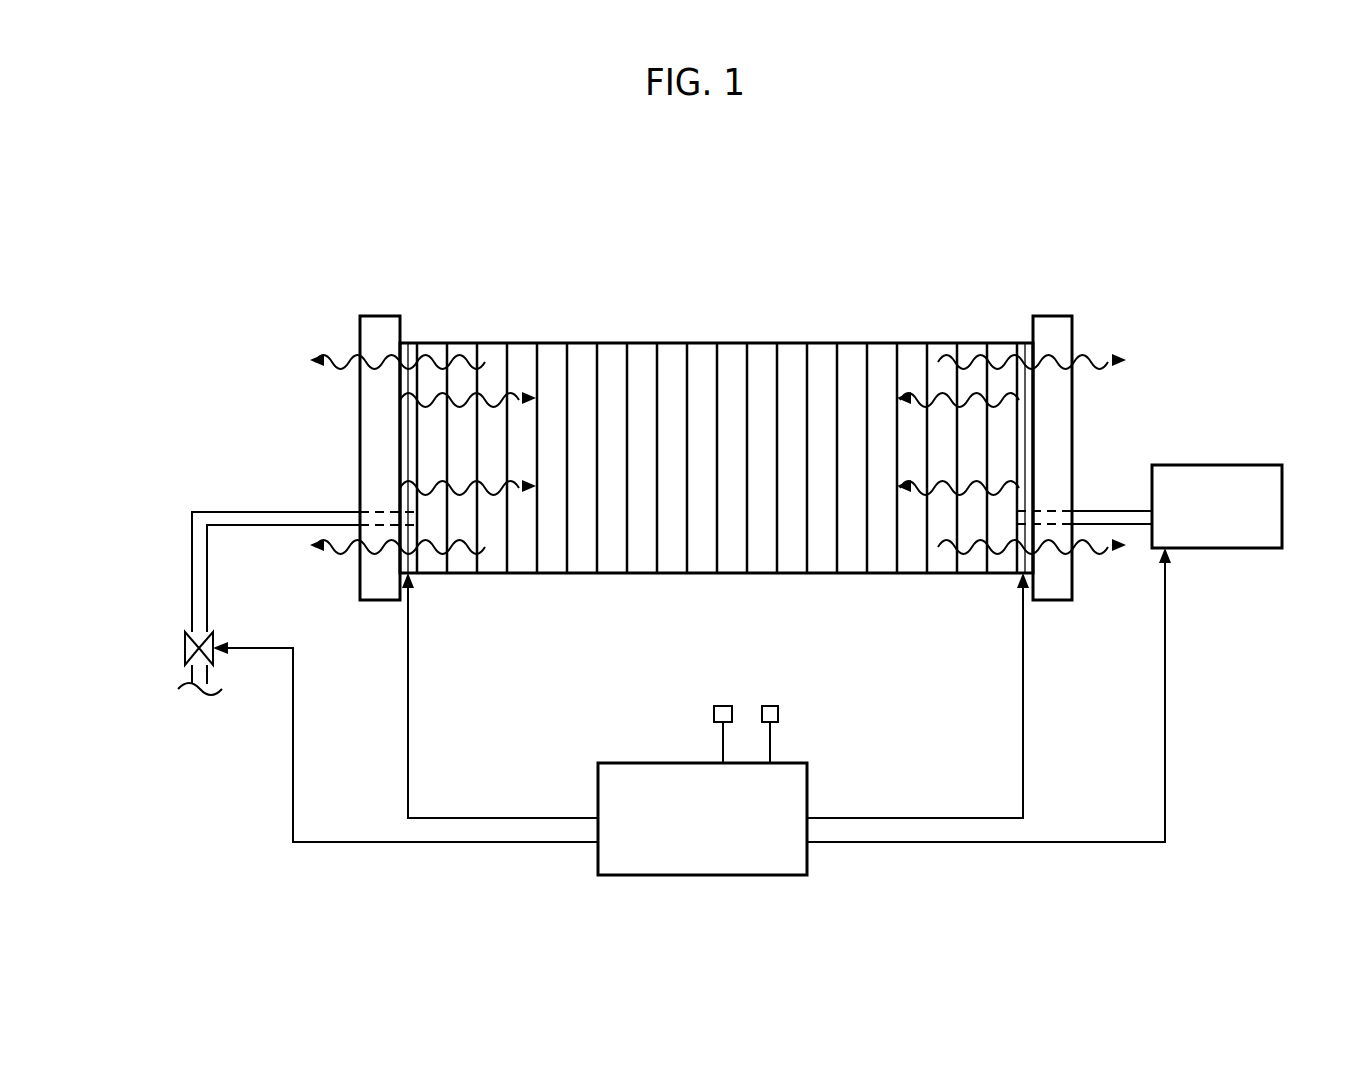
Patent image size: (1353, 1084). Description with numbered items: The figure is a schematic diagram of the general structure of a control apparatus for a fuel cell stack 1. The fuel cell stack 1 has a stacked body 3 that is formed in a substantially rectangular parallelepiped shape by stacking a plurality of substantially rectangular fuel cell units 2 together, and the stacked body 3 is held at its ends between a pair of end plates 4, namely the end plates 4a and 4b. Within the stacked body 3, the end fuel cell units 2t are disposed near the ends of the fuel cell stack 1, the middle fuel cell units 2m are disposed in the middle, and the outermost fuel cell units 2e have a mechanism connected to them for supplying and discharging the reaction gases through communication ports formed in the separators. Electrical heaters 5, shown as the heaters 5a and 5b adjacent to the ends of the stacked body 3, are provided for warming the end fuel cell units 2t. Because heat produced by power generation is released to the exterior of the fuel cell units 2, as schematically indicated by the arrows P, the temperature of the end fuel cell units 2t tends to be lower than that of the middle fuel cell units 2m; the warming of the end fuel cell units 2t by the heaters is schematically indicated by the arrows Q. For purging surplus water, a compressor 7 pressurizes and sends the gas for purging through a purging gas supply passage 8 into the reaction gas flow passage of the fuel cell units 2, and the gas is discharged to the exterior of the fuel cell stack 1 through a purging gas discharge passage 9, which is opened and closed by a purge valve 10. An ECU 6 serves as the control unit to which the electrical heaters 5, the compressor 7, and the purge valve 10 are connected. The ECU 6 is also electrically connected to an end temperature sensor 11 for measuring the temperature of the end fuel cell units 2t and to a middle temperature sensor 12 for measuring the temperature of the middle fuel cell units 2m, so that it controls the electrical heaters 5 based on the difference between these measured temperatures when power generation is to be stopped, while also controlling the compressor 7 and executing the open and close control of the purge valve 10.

The fuel cell stack 1 is at (997, 200).
The fuel cell unit 2 is at (893, 330).
The end fuel cell unit 2t is at (567, 335).
The middle fuel cell unit 2m is at (732, 458).
The outermost fuel cell unit 2e is at (437, 560).
The stacked body 3 is at (1015, 262).
The end plates 4 is at (715, 458).
The end plate 4a is at (1072, 418).
The end plate 4b is at (360, 418).
The electrical heater 5 is at (716, 401).
The electrical heater 5a is at (1020, 345).
The electrical heater 5b is at (408, 345).
The ECU 6 is at (698, 875).
The compressor 7 is at (1235, 550).
The purging gas supply passage 8 is at (1100, 511).
The purging gas discharge passage 9 is at (240, 512).
The purge valve 10 is at (185, 648).
The end temperature sensor 11 is at (780, 714).
The middle temperature sensor 12 is at (725, 706).
The arrows indicating heat release P is at (347, 362).
The arrows indicating warming Q is at (487, 485).